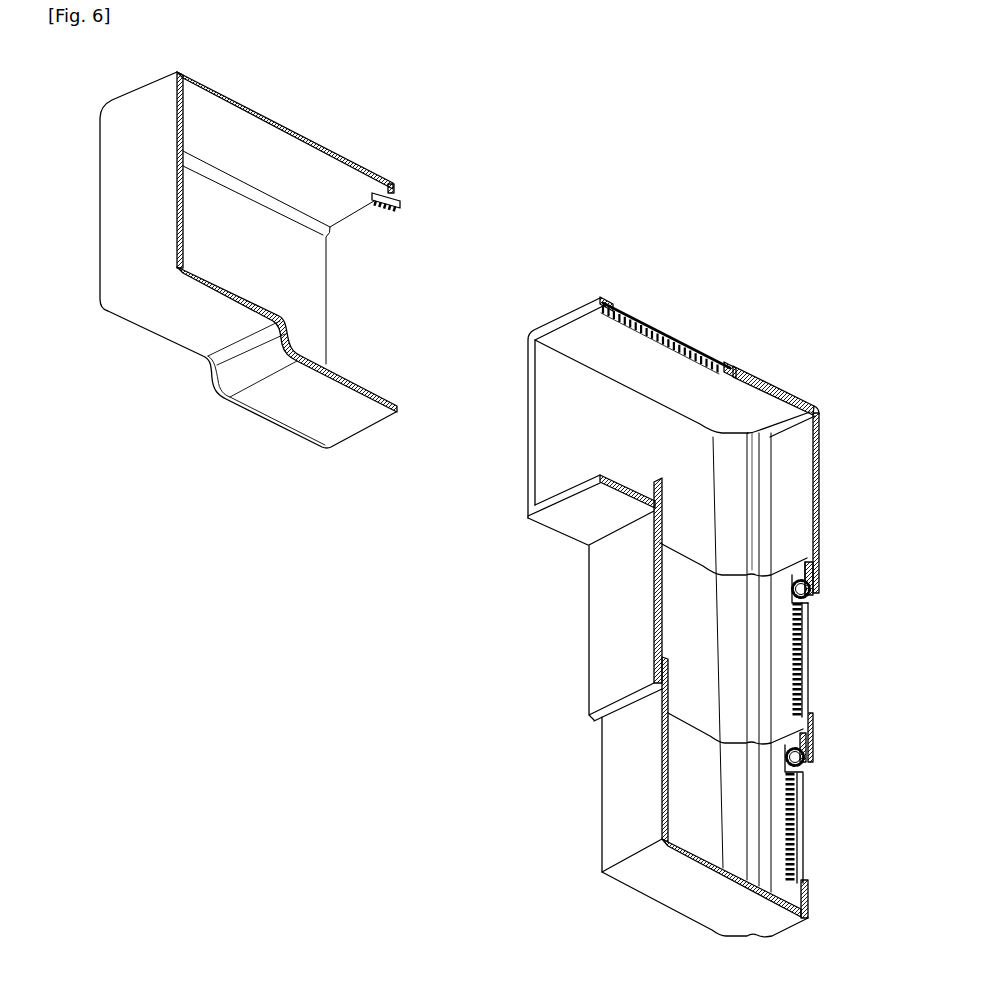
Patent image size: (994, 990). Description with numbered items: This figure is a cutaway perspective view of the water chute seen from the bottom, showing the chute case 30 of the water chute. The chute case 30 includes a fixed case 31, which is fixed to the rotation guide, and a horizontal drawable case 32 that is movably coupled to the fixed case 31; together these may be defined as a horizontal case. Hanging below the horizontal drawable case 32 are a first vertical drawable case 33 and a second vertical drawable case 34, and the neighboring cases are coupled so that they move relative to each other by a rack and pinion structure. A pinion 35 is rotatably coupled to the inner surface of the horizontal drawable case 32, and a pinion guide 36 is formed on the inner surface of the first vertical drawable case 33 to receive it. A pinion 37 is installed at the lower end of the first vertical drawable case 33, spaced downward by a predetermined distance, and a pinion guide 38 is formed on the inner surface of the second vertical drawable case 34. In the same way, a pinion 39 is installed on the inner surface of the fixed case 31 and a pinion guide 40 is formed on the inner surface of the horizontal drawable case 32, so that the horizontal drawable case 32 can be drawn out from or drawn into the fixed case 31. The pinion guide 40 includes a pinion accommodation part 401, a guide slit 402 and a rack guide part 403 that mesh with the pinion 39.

The chute case 30 is at (635, 129).
The fixed case 31 is at (110, 191).
The horizontal drawable case 32 is at (779, 390).
The first vertical drawable case 33 is at (600, 622).
The second vertical drawable case 34 is at (613, 787).
The pinion 35 is at (812, 575).
The pinion guide 36 is at (808, 648).
The pinion 37 is at (807, 745).
The pinion guide 38 is at (797, 828).
The pinion 39 is at (397, 200).
The pinion guide 40 is at (653, 243).
The pinion accommodation part 401 is at (713, 360).
The guide slit 402 is at (688, 343).
The rack guide part 403 is at (653, 338).